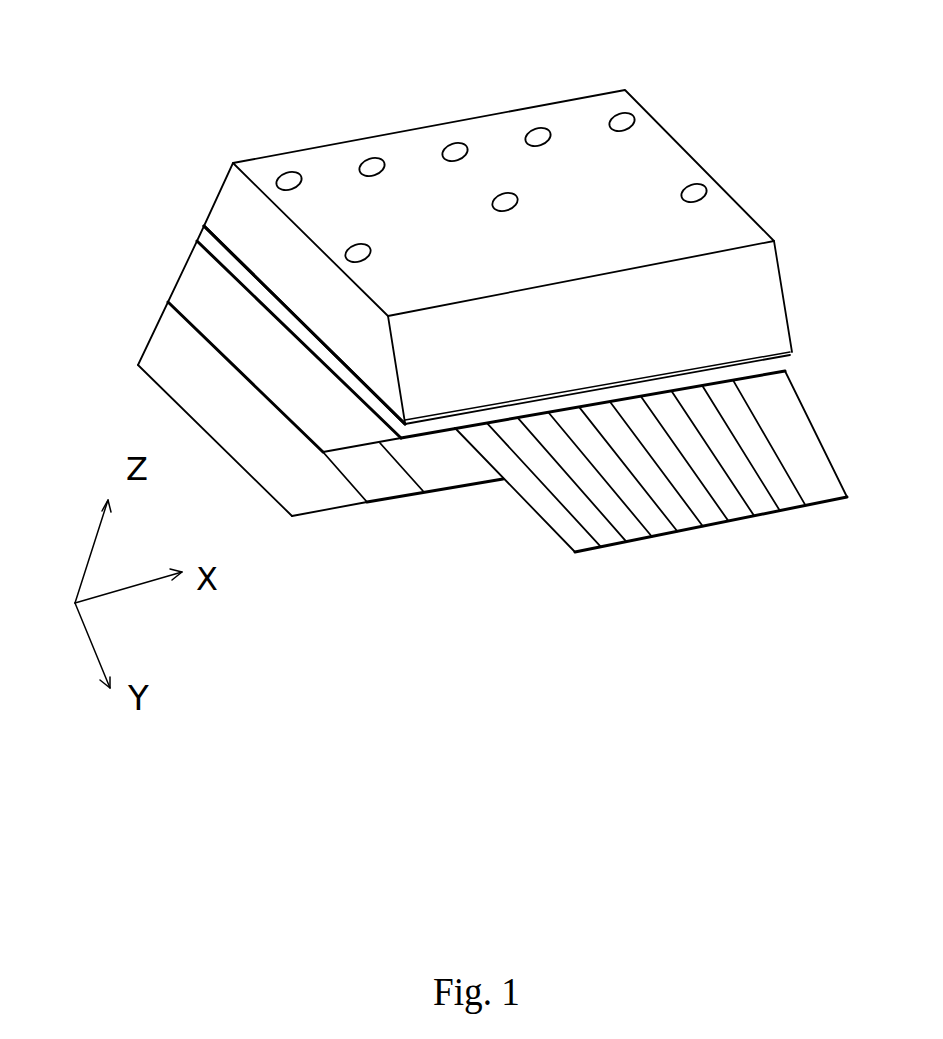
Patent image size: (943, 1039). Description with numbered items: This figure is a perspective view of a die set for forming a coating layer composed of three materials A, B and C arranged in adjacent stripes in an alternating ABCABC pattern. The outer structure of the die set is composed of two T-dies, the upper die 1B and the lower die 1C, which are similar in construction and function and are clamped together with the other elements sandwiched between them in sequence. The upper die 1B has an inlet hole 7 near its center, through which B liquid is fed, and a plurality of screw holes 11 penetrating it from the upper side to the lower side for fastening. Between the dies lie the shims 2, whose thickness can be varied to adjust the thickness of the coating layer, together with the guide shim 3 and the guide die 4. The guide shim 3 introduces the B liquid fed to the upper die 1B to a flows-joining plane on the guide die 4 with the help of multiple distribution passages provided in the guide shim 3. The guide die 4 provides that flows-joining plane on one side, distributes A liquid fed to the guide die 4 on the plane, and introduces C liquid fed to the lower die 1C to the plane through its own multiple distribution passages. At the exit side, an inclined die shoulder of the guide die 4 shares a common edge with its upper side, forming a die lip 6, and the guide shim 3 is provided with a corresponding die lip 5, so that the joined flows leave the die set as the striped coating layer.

The upper die 1B is at (233, 190).
The lower die 1C is at (172, 345).
The shims 2 is at (228, 360).
The guide shim 3 is at (212, 242).
The guide die 4 is at (202, 293).
The die lip 5 is at (790, 355).
The die lip 6 is at (785, 369).
The inlet hole 7 is at (500, 197).
The screw holes 11 is at (686, 192).